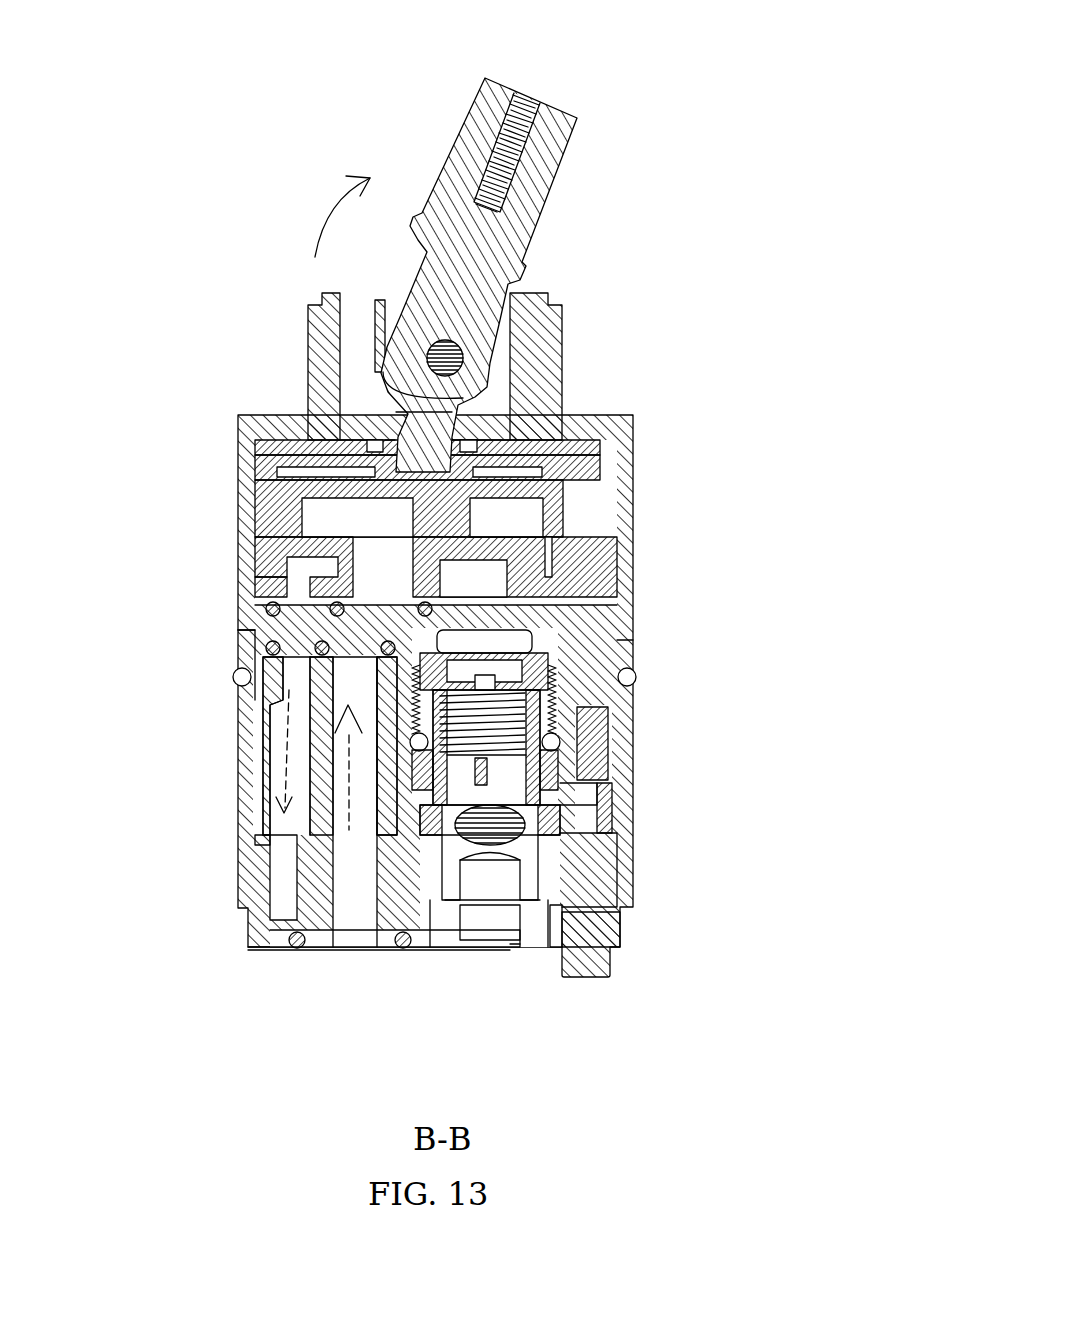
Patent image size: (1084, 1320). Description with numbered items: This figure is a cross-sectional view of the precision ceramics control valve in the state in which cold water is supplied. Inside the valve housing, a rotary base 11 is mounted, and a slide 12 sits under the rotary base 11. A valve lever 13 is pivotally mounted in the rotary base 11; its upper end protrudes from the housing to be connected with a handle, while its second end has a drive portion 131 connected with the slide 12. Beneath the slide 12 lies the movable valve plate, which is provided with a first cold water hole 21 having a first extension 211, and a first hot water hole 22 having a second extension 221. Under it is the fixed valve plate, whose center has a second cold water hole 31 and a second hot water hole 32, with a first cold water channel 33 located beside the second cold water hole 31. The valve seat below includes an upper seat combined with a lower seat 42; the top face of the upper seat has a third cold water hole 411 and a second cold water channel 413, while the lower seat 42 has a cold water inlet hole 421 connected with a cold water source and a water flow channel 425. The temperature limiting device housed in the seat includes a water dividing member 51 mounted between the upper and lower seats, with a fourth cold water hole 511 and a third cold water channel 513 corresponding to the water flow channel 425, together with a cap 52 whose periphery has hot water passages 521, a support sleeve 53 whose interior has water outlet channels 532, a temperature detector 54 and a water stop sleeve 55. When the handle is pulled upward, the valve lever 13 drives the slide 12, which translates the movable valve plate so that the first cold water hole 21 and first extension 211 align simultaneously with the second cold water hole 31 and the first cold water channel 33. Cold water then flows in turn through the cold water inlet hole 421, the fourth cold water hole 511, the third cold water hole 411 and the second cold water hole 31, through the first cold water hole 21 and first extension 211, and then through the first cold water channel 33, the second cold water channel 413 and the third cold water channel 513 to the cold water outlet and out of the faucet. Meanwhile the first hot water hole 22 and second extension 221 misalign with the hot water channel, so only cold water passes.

The rotary base 11 is at (556, 322).
The slide 12 is at (238, 432).
The valve lever 13 is at (565, 118).
The drive portion 131 is at (405, 410).
The first cold water hole 21 is at (371, 464).
The first extension 211 is at (300, 487).
The first hot water hole 22 is at (499, 508).
The second extension 221 is at (540, 507).
The second cold water hole 31 is at (263, 567).
The second hot water hole 32 is at (595, 578).
The first cold water channel 33 is at (262, 577).
The lower seat 42 is at (255, 920).
The third cold water hole 411 is at (232, 679).
The second cold water channel 413 is at (238, 642).
The cold water inlet hole 421 is at (353, 927).
The water flow channel 425 is at (272, 875).
The water dividing member 51 is at (262, 728).
The fourth cold water hole 511 is at (262, 838).
The third cold water channel 513 is at (275, 772).
The cap 52 is at (570, 632).
The hot water passages 521 is at (597, 708).
The support sleeve 53 is at (608, 930).
The water outlet channels 532 is at (500, 880).
The temperature detector 54 is at (592, 850).
The water stop sleeve 55 is at (594, 772).